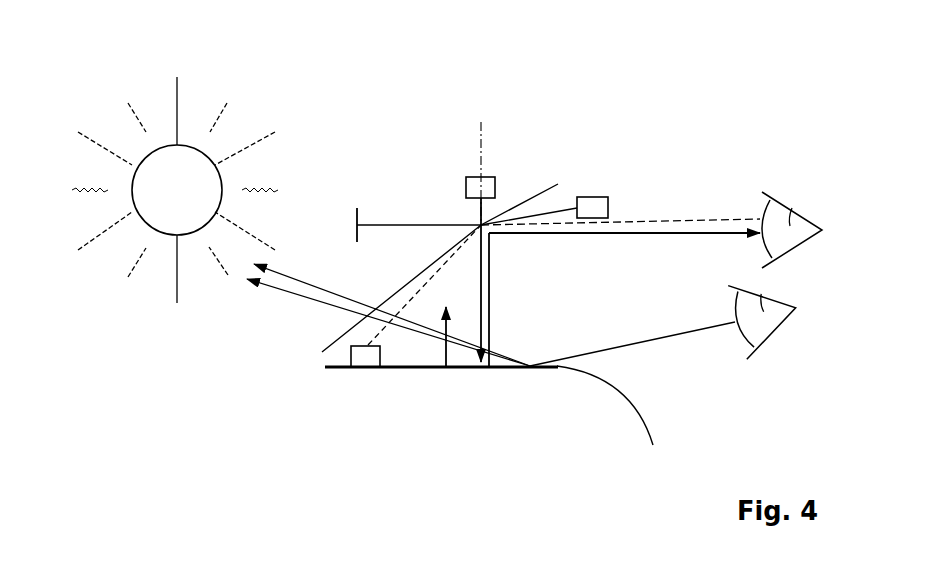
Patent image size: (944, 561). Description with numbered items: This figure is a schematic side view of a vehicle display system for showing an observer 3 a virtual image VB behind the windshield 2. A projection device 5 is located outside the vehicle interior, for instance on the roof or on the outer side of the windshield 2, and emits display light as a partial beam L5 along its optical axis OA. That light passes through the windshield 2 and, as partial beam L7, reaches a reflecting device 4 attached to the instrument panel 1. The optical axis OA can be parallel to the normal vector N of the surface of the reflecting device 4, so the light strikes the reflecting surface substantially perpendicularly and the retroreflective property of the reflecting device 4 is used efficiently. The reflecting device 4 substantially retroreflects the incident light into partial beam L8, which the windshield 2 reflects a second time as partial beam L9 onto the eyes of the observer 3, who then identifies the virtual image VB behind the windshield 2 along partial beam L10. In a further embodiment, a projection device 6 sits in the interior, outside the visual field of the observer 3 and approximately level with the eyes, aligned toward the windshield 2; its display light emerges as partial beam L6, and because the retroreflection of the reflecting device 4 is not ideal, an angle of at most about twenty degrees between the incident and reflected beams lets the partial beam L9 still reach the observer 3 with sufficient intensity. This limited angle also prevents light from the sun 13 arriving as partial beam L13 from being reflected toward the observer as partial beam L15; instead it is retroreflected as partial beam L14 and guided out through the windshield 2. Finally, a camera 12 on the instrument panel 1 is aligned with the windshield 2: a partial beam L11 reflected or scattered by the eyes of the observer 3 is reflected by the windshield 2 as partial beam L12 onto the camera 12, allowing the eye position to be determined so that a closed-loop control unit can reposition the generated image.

The instrument panel 1 is at (647, 422).
The windshield 2 is at (557, 184).
The observer 3 is at (792, 210).
The reflecting device 4 is at (430, 367).
The projection device 5 is at (465, 188).
The projection device 6 is at (598, 197).
The camera 12 is at (350, 358).
The sun 13 is at (189, 204).
The virtual image VB is at (356, 214).
The optical axis OA is at (480, 130).
The normal vector N is at (452, 360).
The partial beam L5 is at (478, 207).
The partial beam L6 is at (565, 208).
The partial beam L7 is at (491, 264).
The partial beam L8 is at (492, 304).
The partial beam L9 is at (652, 234).
The partial beam L10 is at (388, 226).
The partial beam L11 is at (703, 218).
The partial beam L12 is at (397, 337).
The partial beam L13 is at (292, 294).
The partial beam L14 is at (293, 276).
The partial beam L15 is at (693, 332).